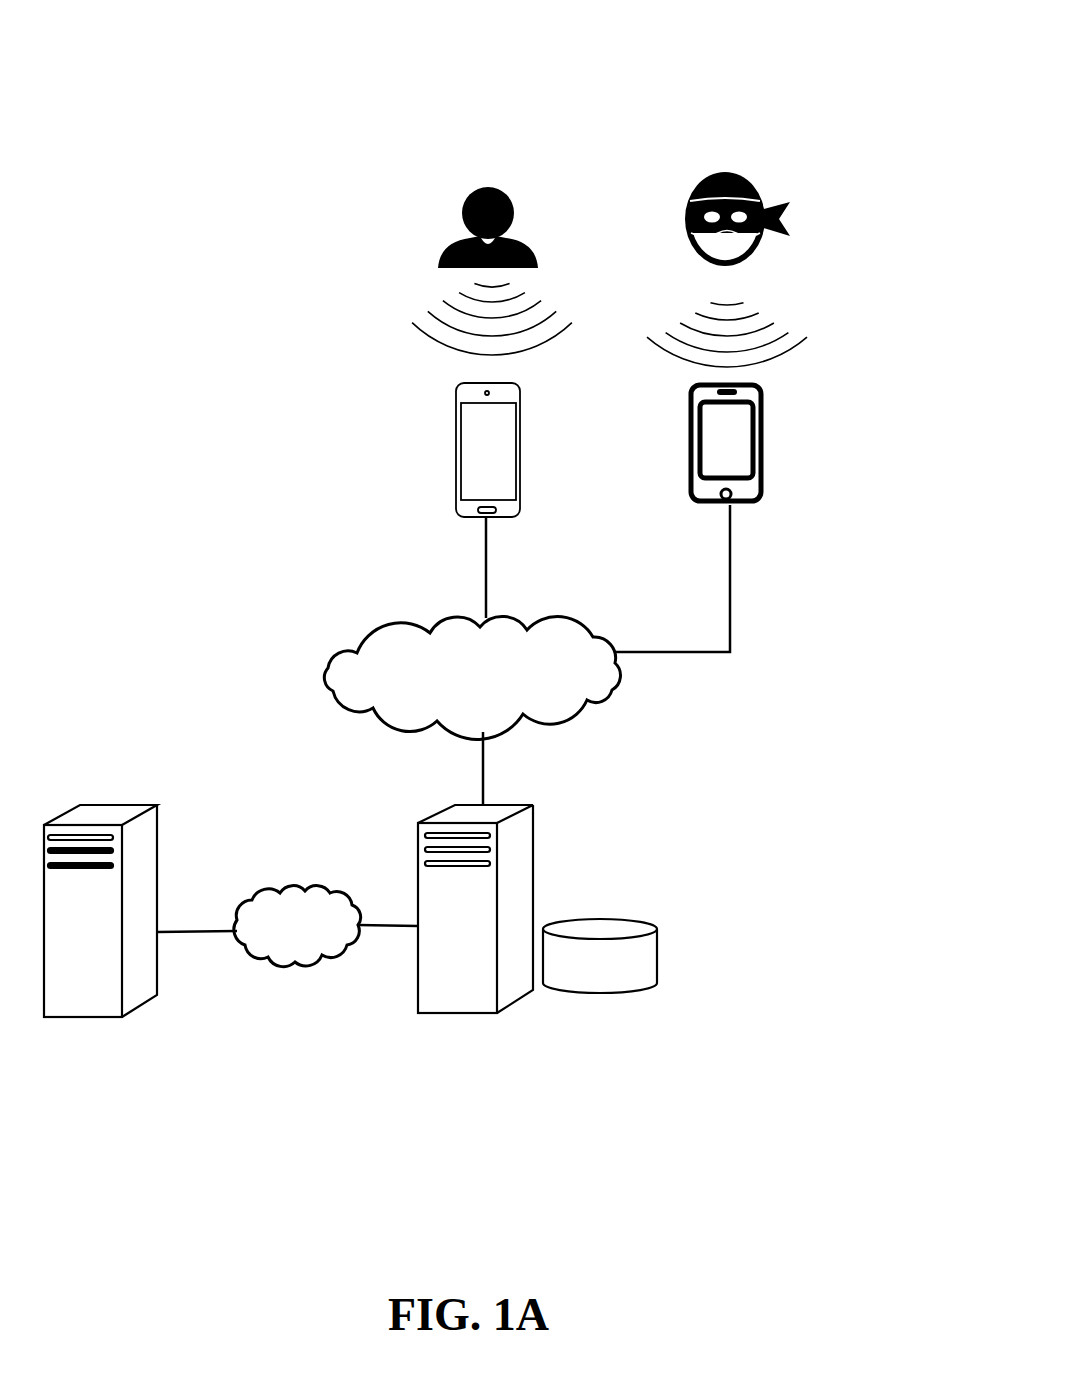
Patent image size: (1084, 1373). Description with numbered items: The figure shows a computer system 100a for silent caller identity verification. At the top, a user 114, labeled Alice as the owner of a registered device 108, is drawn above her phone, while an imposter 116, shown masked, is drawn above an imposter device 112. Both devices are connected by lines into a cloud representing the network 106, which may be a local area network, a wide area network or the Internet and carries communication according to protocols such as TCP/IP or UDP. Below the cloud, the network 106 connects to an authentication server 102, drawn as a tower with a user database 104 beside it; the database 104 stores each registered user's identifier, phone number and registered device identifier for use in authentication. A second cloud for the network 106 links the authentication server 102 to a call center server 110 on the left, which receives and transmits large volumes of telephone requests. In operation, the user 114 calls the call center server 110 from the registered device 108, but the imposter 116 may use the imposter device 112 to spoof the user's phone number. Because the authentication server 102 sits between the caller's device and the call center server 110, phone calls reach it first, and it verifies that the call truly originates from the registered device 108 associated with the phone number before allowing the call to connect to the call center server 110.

The computer system 100a is at (874, 72).
The authentication server 102 is at (475, 909).
The user database 104 is at (600, 956).
The network 106 is at (388, 792).
The registered device 108 is at (488, 500).
The call center server 110 is at (100, 911).
The imposter device 112 is at (687, 518).
The user 114 is at (480, 271).
The imposter 116 is at (745, 269).